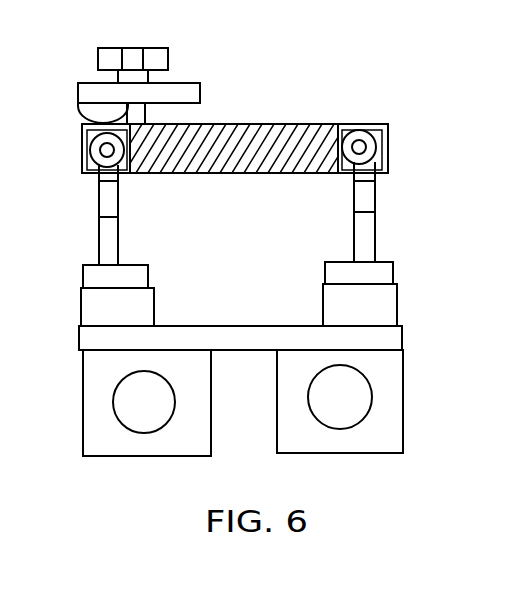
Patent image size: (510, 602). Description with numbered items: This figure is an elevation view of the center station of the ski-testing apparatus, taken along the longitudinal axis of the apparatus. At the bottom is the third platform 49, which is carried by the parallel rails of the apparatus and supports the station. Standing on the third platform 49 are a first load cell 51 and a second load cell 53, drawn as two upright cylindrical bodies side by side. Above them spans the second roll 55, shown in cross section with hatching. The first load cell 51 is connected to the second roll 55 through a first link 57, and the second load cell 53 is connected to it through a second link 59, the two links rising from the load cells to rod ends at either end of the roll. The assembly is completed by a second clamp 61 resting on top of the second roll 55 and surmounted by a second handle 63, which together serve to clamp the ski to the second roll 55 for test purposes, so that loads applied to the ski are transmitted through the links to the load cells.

The third platform 49 is at (220, 325).
The first load cell 51 is at (82, 308).
The second load cell 53 is at (398, 300).
The second roll 55 is at (267, 122).
The first link 57 is at (100, 232).
The second link 59 is at (377, 237).
The second clamp 61 is at (202, 88).
The second handle 63 is at (139, 47).